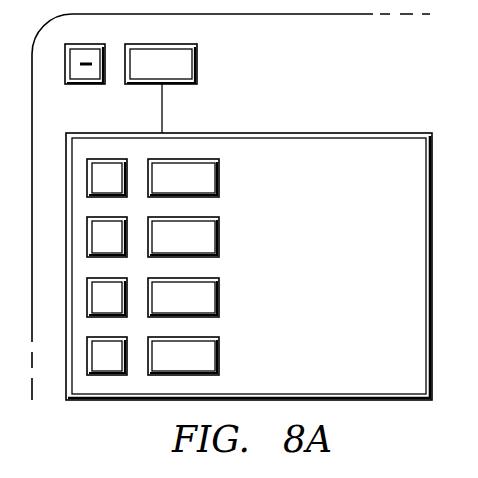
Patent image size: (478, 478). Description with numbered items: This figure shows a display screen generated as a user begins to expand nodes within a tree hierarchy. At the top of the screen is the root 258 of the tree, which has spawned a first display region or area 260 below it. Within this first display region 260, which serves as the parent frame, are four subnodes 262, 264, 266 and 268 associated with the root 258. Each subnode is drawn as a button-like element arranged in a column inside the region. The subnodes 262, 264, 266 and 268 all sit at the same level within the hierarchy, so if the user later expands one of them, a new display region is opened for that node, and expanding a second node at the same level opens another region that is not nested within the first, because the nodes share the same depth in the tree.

The root 258 is at (320, 84).
The first display region 260 is at (352, 278).
The subnode 262 is at (219, 176).
The subnode 264 is at (219, 235).
The subnode 266 is at (219, 300).
The subnode 268 is at (219, 358).